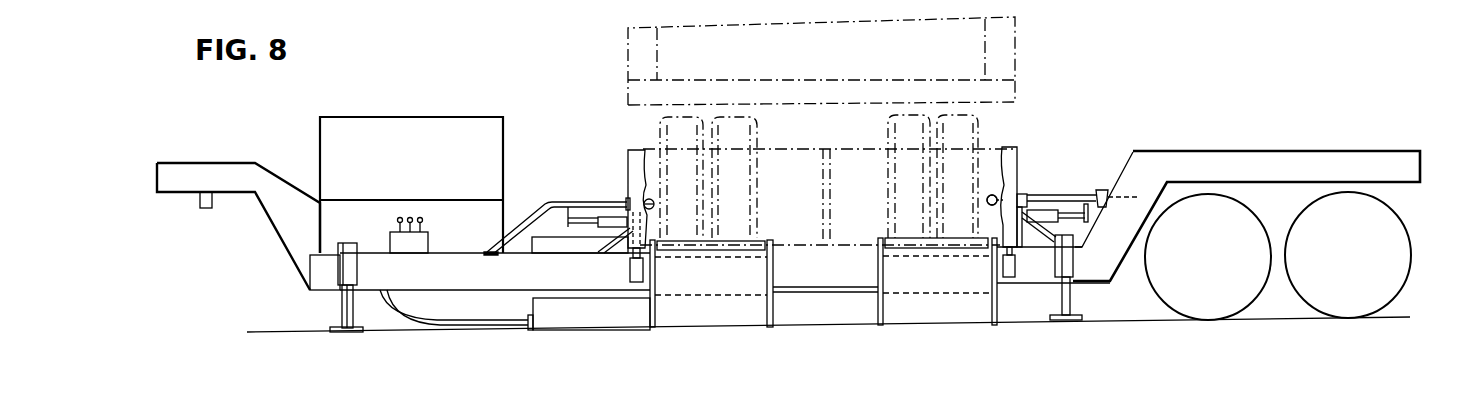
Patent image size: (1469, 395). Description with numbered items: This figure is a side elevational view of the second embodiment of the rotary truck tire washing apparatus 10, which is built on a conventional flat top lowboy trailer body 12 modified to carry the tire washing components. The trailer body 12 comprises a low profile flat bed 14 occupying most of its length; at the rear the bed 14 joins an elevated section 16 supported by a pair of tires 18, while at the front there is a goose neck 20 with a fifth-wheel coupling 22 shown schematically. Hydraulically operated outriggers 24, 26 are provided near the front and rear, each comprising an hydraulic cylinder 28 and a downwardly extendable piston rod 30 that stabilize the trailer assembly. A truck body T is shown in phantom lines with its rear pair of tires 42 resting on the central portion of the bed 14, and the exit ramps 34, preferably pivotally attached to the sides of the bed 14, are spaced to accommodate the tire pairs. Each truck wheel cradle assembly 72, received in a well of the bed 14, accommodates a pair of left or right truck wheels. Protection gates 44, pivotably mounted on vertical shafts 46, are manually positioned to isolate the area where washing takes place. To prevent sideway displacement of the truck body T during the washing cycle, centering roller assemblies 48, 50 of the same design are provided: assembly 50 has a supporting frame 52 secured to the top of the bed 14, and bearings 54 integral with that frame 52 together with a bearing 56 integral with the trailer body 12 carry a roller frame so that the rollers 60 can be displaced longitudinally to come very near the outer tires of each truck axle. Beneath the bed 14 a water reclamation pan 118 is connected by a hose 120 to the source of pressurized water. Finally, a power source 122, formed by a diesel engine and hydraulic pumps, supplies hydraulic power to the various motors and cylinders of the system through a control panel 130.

The truck body T is at (628, 43).
The rotary truck tire washing apparatus 10 is at (1197, 104).
The flat top trailer body 12 is at (1300, 152).
The low profile flat bed 14 is at (812, 243).
The elevated section 16 is at (1186, 157).
The tires 18 is at (1316, 286).
The goose neck 20 is at (193, 163).
The fifth-wheel coupling 22 is at (200, 207).
The hydraulically operated outrigger 24 is at (334, 276).
The hydraulically operated outrigger 26 is at (1075, 265).
The hydraulic cylinder 28 is at (348, 243).
The piston rod 30 is at (355, 288).
The exit ramps 34 is at (892, 302).
The rear pair of tires 42 is at (754, 142).
The protection gates 44 is at (628, 165).
The vertical shafts 46 is at (628, 258).
The centering roller assembly 48 is at (582, 202).
The centering roller assembly 50 is at (1063, 192).
The supporting frame 52 is at (1022, 247).
The bearings 54 is at (1027, 194).
The bearing 56 is at (1096, 208).
The rollers 60 is at (988, 197).
The truck wheel cradle assembly 72 is at (762, 238).
The water reclamation pan 118 is at (563, 310).
The hose 120 is at (430, 320).
The power source 122 is at (409, 117).
The control panel 130 is at (432, 241).